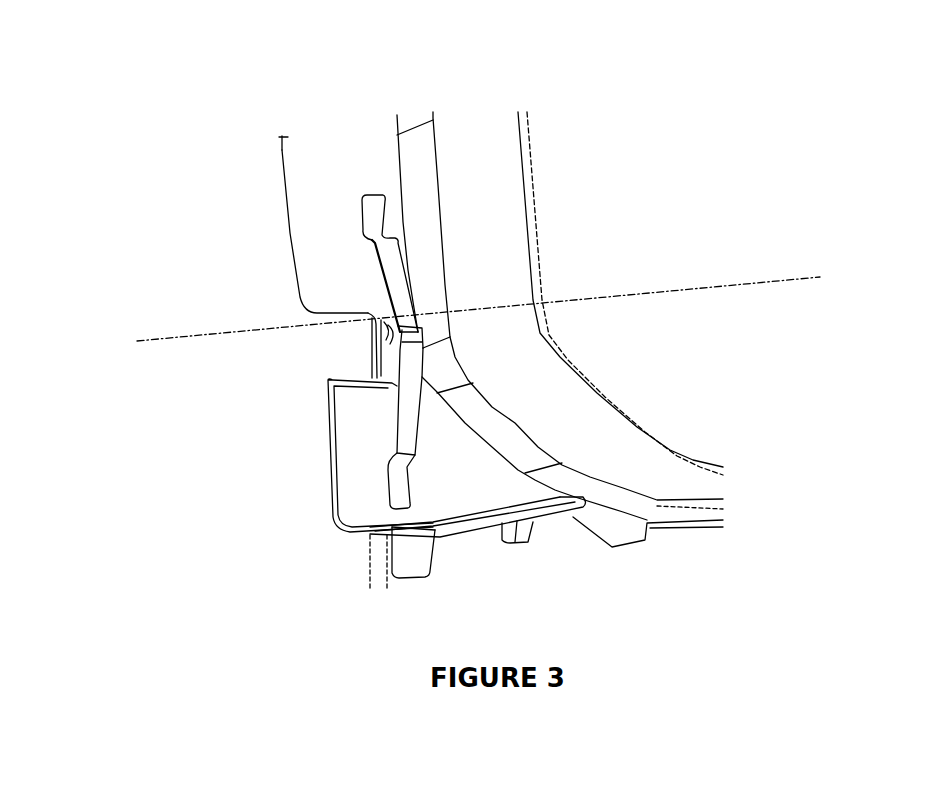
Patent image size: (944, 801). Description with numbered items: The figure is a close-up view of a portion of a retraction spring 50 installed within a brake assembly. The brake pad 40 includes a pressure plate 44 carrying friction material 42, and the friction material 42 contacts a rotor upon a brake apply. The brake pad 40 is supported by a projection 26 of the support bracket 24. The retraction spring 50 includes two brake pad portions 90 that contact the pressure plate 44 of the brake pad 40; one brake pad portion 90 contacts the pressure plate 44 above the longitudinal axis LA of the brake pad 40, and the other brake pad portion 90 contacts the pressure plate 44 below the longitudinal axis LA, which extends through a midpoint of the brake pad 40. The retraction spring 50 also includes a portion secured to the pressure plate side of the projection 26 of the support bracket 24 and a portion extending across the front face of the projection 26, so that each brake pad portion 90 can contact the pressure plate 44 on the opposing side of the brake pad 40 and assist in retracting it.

The support bracket 24 is at (271, 422).
The projection 26 is at (352, 348).
The brake pad 40 is at (615, 213).
The friction material 42 is at (612, 266).
The pressure plate 44 is at (318, 172).
The retraction spring 50 is at (368, 285).
The brake pad portion 90 is at (405, 282).
The longitudinal axis LA is at (495, 305).